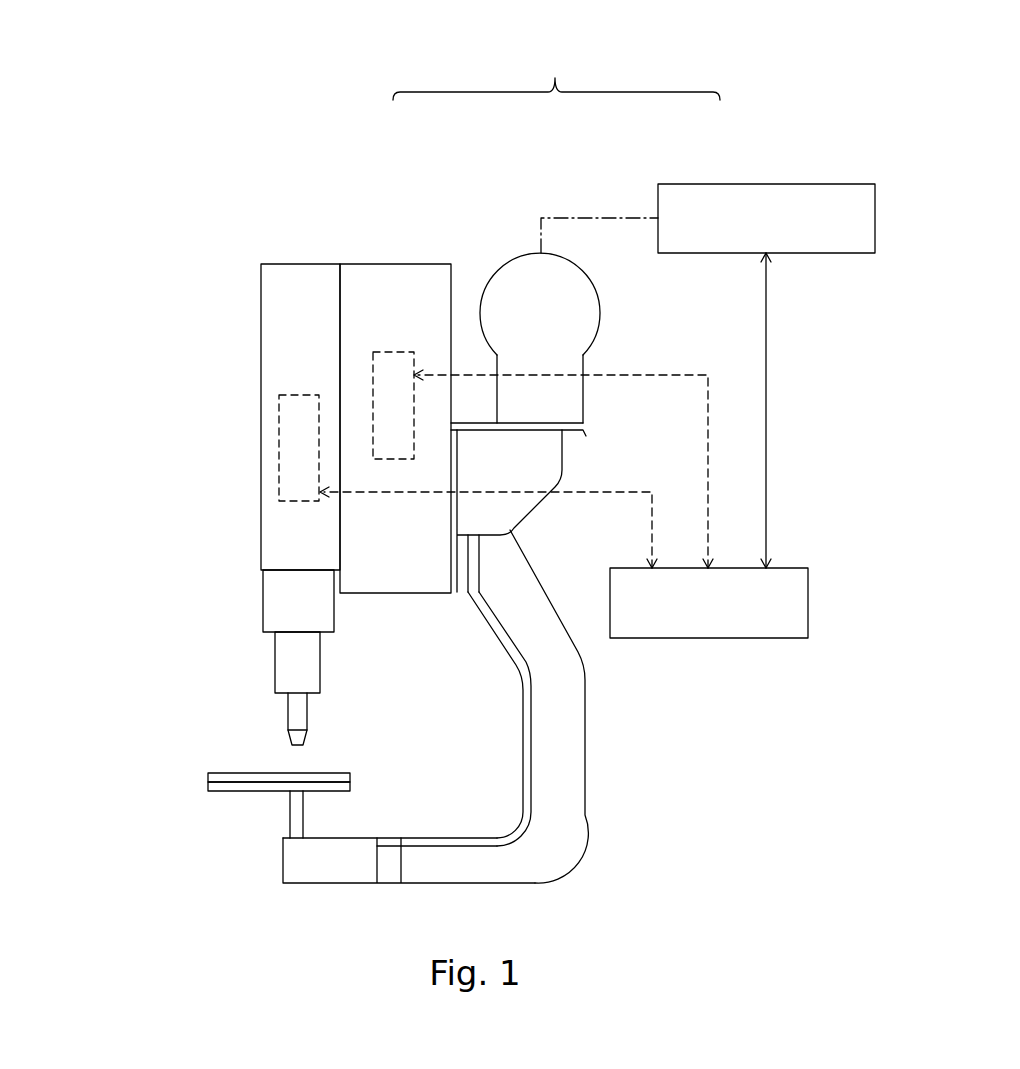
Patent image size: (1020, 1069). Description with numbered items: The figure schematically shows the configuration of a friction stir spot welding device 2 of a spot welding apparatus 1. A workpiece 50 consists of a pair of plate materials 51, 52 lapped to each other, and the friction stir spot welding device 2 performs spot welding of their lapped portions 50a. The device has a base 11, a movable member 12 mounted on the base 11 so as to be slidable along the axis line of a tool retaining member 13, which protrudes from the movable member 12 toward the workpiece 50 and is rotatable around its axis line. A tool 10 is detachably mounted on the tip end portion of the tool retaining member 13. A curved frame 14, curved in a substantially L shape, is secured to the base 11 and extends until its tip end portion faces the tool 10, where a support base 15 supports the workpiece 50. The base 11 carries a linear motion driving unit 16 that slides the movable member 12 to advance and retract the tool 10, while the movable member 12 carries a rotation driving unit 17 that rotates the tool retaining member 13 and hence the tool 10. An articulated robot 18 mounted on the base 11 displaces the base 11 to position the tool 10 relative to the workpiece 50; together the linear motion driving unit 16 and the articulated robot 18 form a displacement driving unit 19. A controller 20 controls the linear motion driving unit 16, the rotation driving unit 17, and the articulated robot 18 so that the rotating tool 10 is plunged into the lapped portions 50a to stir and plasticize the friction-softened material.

The spot welding apparatus 1 is at (811, 105).
The friction stir spot welding device 2 is at (240, 232).
The tool 10 is at (292, 745).
The base 11 is at (438, 264).
The movable member 12 is at (261, 318).
The tool retaining member 13 is at (275, 668).
The curved frame 14 is at (586, 770).
The support base 15 is at (280, 815).
The linear motion driving unit 16 is at (393, 352).
The rotation driving unit 17 is at (292, 395).
The articulated robot 18 is at (710, 184).
The displacement driving unit 19 is at (556, 69).
The controller 20 is at (705, 638).
The workpiece 50 is at (235, 762).
The lapped portions 50a is at (308, 773).
The plate material 51 is at (234, 768).
The plate material 52 is at (232, 793).